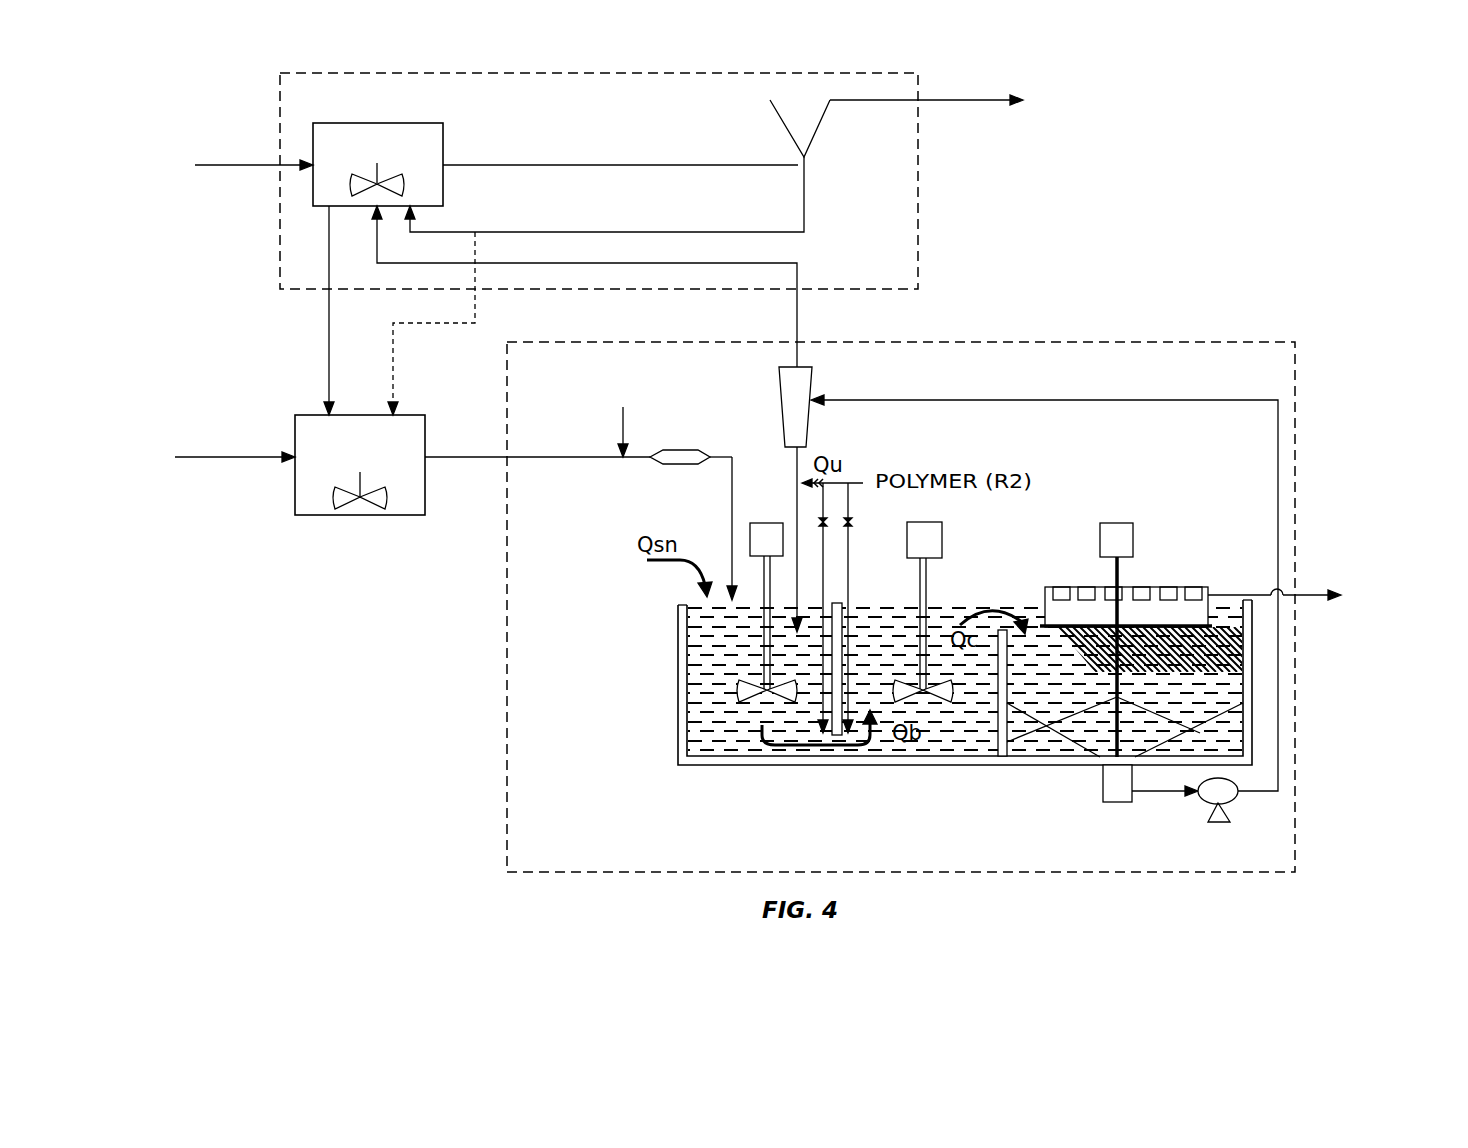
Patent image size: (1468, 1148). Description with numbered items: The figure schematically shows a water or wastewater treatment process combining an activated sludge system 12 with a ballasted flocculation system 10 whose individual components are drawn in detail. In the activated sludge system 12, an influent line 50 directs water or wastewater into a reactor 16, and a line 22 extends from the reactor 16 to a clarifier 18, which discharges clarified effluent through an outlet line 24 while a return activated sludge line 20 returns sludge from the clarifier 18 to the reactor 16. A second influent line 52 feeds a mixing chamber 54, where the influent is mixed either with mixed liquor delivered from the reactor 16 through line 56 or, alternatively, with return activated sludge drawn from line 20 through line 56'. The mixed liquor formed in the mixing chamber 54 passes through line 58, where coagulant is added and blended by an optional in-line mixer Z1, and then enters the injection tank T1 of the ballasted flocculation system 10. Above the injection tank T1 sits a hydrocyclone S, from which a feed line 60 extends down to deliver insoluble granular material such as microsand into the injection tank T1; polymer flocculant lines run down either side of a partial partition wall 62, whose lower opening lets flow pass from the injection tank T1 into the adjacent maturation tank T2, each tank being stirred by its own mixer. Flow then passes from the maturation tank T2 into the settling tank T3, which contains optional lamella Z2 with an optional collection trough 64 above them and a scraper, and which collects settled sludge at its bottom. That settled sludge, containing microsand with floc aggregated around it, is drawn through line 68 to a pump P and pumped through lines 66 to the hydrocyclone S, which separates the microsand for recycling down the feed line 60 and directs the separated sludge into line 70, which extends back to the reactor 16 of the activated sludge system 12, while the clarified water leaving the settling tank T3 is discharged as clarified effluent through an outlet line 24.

The ballasted flocculation system 10 is at (1222, 342).
The activated sludge system 12 is at (918, 236).
The reactor 16 is at (443, 135).
The clarifier 18 is at (782, 127).
The return activated sludge line 20 is at (804, 210).
The line 22 is at (540, 165).
The outlet line 24 is at (960, 100).
The influent line 50 is at (264, 165).
The influent line 52 is at (246, 457).
The mixing chamber 54 is at (325, 515).
The line 56 is at (302, 310).
The line 56' is at (431, 323).
The line 58 is at (485, 457).
The feed line 60 is at (797, 507).
The partition wall 62 is at (838, 652).
The collection trough 64 is at (1142, 617).
The lines 66 is at (1276, 500).
The line 68 is at (1162, 793).
The line 70 is at (797, 320).
The hydrocyclone S is at (803, 384).
The pump P is at (1226, 786).
The in-line mixer Z1 is at (683, 457).
The lamella Z2 is at (1087, 658).
The injection tank T1 is at (727, 683).
The maturation tank T2 is at (965, 705).
The settling tank T3 is at (1050, 705).